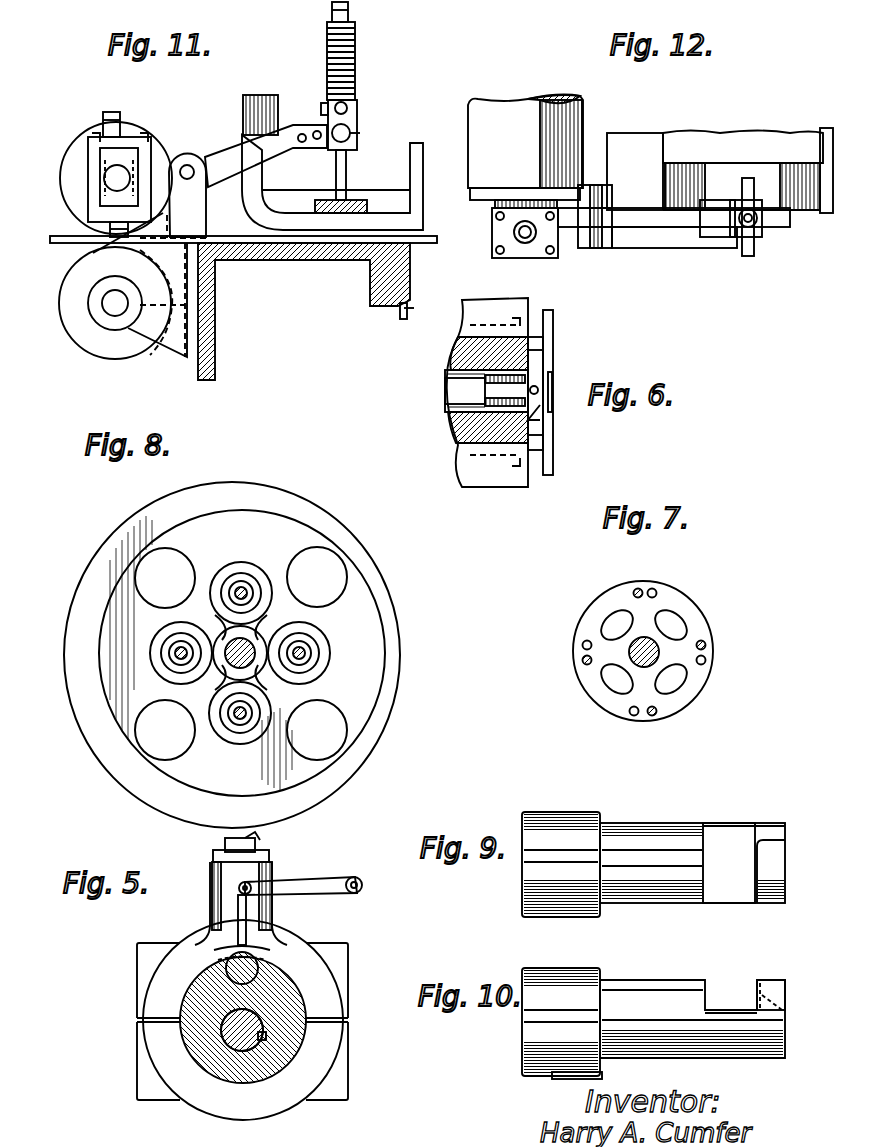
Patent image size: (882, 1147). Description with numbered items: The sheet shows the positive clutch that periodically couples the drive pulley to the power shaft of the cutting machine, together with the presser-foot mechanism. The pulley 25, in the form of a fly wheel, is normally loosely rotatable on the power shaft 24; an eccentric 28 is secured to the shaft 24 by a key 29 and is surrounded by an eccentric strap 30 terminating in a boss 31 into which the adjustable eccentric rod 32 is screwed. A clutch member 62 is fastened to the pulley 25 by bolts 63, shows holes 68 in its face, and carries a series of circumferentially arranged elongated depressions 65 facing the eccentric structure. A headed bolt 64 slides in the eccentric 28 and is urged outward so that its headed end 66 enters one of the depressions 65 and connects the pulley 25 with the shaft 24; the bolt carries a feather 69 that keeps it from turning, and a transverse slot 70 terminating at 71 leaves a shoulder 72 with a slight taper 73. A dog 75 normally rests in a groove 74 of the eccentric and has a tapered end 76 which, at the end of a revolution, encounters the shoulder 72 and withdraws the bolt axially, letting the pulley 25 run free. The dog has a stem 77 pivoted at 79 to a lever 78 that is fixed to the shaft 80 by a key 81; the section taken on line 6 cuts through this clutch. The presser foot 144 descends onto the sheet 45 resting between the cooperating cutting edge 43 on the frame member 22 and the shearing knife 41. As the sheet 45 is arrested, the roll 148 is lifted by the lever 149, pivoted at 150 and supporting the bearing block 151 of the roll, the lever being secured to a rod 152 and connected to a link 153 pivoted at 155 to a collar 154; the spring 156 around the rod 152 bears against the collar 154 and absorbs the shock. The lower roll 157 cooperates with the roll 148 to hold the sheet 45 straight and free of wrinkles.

In FIG. 11, the frame member 22 is at (262, 258).
In FIG. 7, the power shaft 24 is at (655, 643).
In FIG. 8, the power shaft 24 is at (233, 640).
In FIG. 5, the power shaft 24 is at (258, 1020).
In FIG. 8, the pulley 25 is at (222, 482).
In FIG. 6, the eccentric 28 is at (462, 352).
In FIG. 5, the eccentric 28 is at (305, 1050).
In FIG. 5, the key 29 is at (265, 1040).
In FIG. 6, the eccentric strap 30 is at (472, 482).
In FIG. 5, the eccentric strap 30 is at (345, 958).
In FIG. 5, the boss 31 is at (213, 858).
In FIG. 5, the eccentric rod 32 is at (225, 845).
In FIG. 11, the shearing knife 41 is at (423, 160).
In FIG. 11, the cutting edge 43 is at (410, 283).
In FIG. 11, the sheet 45 is at (426, 238).
In FIG. 5, the section line 6 is at (420, 960).
In FIG. 7, the clutch member 62 is at (675, 705).
In FIG. 7, the bolt 63 is at (706, 646).
In FIG. 8, the bolt 63 is at (306, 652).
In FIG. 5, the bolt 63 is at (262, 846).
In FIG. 6, the headed bolt 64 is at (460, 398).
In FIG. 5, the headed bolt 64 is at (180, 990).
In FIG. 9, the headed bolt 64 is at (668, 905).
In FIG. 10, the headed bolt 64 is at (652, 978).
In FIG. 7, the depression 65 is at (610, 625).
In FIG. 6, the headed end 66 is at (556, 383).
In FIG. 9, the headed end 66 is at (570, 917).
In FIG. 10, the headed end 66 is at (570, 978).
In FIG. 7, the hole 68 is at (584, 663).
In FIG. 10, the feather 69 is at (560, 1079).
In FIG. 9, the transverse slot 70 is at (733, 840).
In FIG. 10, the transverse slot 70 is at (731, 997).
In FIG. 9, the slot end 71 is at (776, 828).
In FIG. 9, the shoulder 72 is at (770, 863).
In FIG. 10, the shoulder 72 is at (778, 982).
In FIG. 10, the taper 73 is at (772, 1006).
In FIG. 6, the groove 74 is at (553, 470).
In FIG. 6, the dog 75 is at (540, 398).
In FIG. 5, the dog 75 is at (264, 962).
In FIG. 6, the tapered end 76 is at (545, 425).
In FIG. 5, the tapered end 76 is at (230, 960).
In FIG. 6, the stem 77 is at (535, 395).
In FIG. 5, the stem 77 is at (238, 915).
In FIG. 5, the lever 78 is at (327, 880).
In FIG. 5, the pivot 79 is at (252, 885).
In FIG. 5, the shaft 80 is at (362, 883).
In FIG. 5, the key 81 is at (356, 878).
In FIG. 11, the presser foot 144 is at (262, 95).
In FIG. 11, the roll 148 is at (135, 130).
In FIG. 12, the roll 148 is at (505, 108).
In FIG. 11, the lever 149 is at (226, 150).
In FIG. 12, the lever 149 is at (685, 228).
In FIG. 11, the pivot 150 is at (187, 165).
In FIG. 12, the pivot 150 is at (595, 250).
In FIG. 11, the bearing block 151 is at (100, 173).
In FIG. 12, the bearing block 151 is at (522, 260).
In FIG. 11, the rod 152 is at (347, 162).
In FIG. 11, the link 153 is at (358, 130).
In FIG. 11, the collar 154 is at (355, 105).
In FIG. 11, the pivot 155 is at (322, 105).
In FIG. 11, the spring 156 is at (356, 50).
In FIG. 11, the roll 157 is at (92, 360).